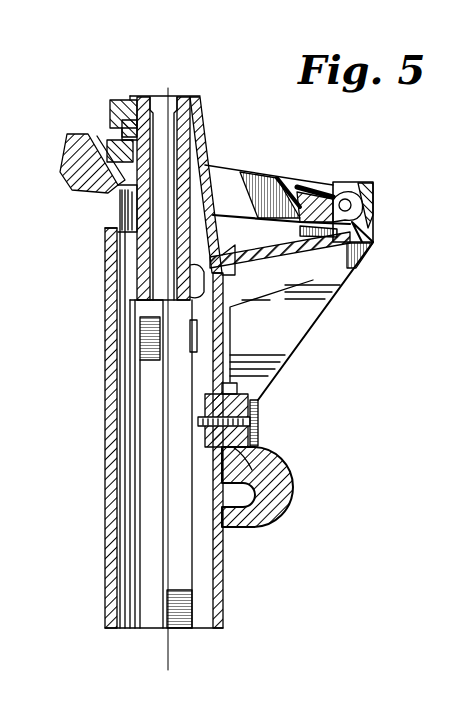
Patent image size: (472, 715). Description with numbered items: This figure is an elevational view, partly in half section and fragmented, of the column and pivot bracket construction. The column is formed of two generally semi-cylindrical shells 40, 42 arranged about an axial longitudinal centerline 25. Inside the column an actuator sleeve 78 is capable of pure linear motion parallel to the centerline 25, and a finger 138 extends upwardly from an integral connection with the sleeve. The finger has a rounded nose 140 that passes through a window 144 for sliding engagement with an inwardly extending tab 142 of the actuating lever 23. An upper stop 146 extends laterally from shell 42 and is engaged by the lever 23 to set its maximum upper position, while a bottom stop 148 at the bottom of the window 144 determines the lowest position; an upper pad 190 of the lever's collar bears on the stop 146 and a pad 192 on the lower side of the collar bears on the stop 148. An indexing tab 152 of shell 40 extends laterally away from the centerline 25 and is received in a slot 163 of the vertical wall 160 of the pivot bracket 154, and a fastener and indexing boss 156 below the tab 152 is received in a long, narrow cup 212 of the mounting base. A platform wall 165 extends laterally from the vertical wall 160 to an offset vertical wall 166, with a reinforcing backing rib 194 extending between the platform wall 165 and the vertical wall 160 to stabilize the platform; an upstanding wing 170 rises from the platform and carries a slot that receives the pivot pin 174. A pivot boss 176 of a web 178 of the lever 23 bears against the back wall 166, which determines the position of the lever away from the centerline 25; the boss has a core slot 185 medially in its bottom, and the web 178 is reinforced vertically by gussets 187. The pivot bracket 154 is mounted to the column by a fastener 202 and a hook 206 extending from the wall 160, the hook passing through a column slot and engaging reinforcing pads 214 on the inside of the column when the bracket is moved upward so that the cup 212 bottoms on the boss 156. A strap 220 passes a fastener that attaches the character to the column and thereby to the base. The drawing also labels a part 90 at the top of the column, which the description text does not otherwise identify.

The actuating lever 23 is at (75, 132).
The axial longitudinal centerline 25 is at (168, 578).
The semi-cylindrical shell 40 is at (222, 615).
The semi-cylindrical shell 42 is at (108, 608).
The actuator sleeve 78 is at (142, 503).
The inner tube 90 is at (180, 98).
The finger 138 is at (200, 180).
The rounded nose 140 is at (152, 196).
The inwardly extending tab 142 is at (120, 205).
The window 144 is at (112, 222).
The upper stop 146 is at (112, 100).
The bottom stop 148 is at (103, 234).
The indexing tab 152 is at (224, 255).
The pivot bracket 154 is at (310, 338).
The fastener and indexing boss 156 is at (250, 456).
The vertical wall 160 is at (247, 303).
The slot 163 is at (235, 300).
The platform wall 165 is at (374, 242).
The offset vertical wall 166 is at (374, 206).
The upstanding wing 170 is at (336, 188).
The pivot pin 174 is at (374, 224).
The pivot boss 176 is at (374, 190).
The web 178 is at (318, 185).
The core slot 185 is at (352, 252).
The gussets 187 is at (294, 188).
The upper pad 190 is at (110, 135).
The pad 192 is at (105, 190).
The reinforcing backing rib 194 is at (313, 307).
The fastener 202 is at (262, 430).
The hook 206 is at (197, 277).
The cup 212 is at (262, 410).
The reinforcing pads 214 is at (290, 180).
The strap 220 is at (278, 510).